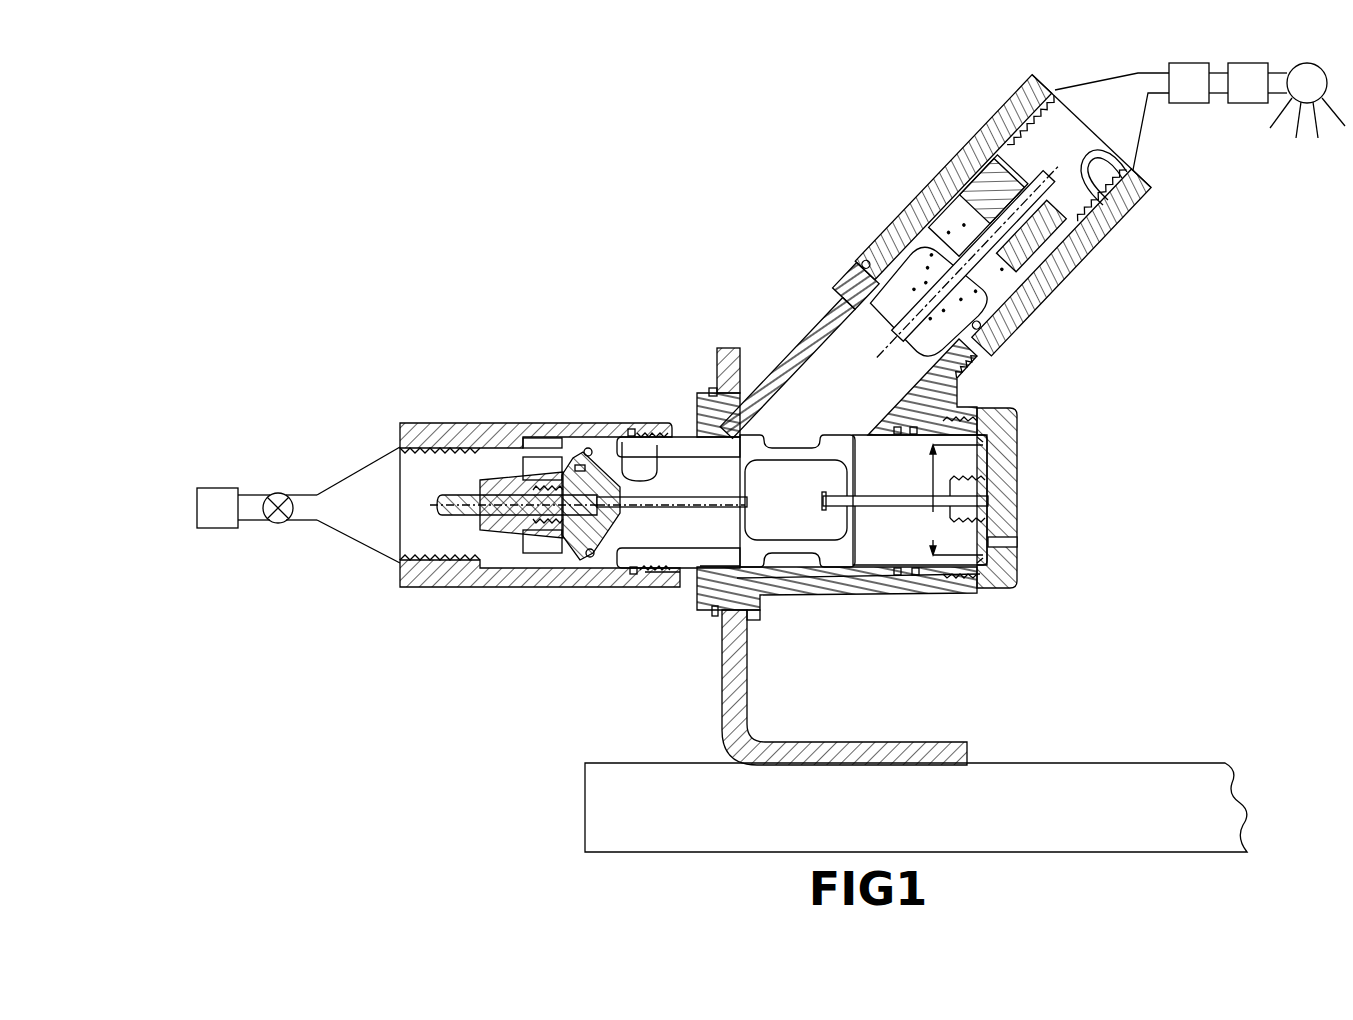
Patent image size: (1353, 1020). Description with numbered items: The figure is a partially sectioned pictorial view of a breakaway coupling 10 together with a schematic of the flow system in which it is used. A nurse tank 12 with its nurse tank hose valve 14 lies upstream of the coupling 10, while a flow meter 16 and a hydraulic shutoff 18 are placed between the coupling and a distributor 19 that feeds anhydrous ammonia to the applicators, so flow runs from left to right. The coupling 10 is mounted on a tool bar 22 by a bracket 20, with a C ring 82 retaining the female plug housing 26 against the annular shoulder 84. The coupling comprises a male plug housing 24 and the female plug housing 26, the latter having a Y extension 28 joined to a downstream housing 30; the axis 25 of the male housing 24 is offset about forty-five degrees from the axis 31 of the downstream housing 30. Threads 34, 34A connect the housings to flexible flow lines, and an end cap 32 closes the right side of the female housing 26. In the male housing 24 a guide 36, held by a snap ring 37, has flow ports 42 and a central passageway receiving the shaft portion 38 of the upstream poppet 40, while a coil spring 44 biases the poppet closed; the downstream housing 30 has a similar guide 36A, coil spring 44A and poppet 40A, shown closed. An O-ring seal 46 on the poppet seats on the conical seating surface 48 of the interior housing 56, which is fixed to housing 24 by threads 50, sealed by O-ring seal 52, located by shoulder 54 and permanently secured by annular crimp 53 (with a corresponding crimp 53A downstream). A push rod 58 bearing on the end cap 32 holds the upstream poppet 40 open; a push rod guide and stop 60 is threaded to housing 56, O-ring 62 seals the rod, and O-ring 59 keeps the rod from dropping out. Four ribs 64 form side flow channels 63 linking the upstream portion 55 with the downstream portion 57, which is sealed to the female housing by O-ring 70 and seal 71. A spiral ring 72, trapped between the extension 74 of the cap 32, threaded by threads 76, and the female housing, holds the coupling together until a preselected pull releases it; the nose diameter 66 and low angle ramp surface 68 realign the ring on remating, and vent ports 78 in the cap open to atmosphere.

The breakaway coupling 10 is at (580, 328).
The nurse tank 12 is at (207, 518).
The nurse tank hose valve 14 is at (277, 493).
The flow meter 16 is at (1141, 116).
The hydraulic shutoff 18 is at (1257, 83).
The distributor 19 is at (1307, 100).
The bracket 20 is at (752, 744).
The tool bar 22 is at (1022, 773).
The male plug housing 24 is at (590, 582).
The axis 25 is at (470, 497).
The female plug housing 26 is at (823, 588).
The Y extension 28 is at (947, 397).
The downstream housing 30 is at (1095, 248).
The axis 31 is at (907, 310).
The end cap 32 is at (1000, 438).
The threads 34 is at (423, 447).
The threads 34A is at (1122, 175).
The guide 36 is at (520, 490).
The guide 36A is at (998, 195).
The snap ring 37 is at (562, 437).
The shaft portion 38 is at (520, 520).
The upstream poppet 40 is at (580, 466).
The downstream poppet 40A is at (938, 309).
The flow ports 42 is at (556, 515).
The coil spring 44 is at (543, 545).
The coil spring 44A is at (990, 262).
The O-ring seal 46 is at (588, 450).
The conical seating surface 48 is at (653, 430).
The threads 50 is at (653, 575).
The O-ring seal 52 is at (633, 575).
The annular crimp 53 is at (670, 575).
The annular crimp 53A is at (853, 265).
The shoulder 54 is at (685, 437).
The upstream portion 55 is at (708, 566).
The interior housing 56 is at (890, 474).
The downstream portion 57 is at (868, 568).
The push rod 58 is at (680, 500).
The O-ring 59 is at (822, 504).
The push rod guide and stop 60 is at (990, 478).
The O-ring 62 is at (988, 508).
The side flow channels 63 is at (778, 486).
The ribs 64 is at (800, 447).
The nose diameter 66 is at (952, 500).
The ramp surface 68 is at (985, 560).
The O-ring 70 is at (902, 578).
The seal 71 is at (718, 393).
The spiral ring 72 is at (915, 573).
The extension 74 is at (967, 578).
The threads 76 is at (962, 424).
The vent ports 78 is at (1000, 543).
The C ring 82 is at (715, 615).
The annular shoulder 84 is at (757, 620).